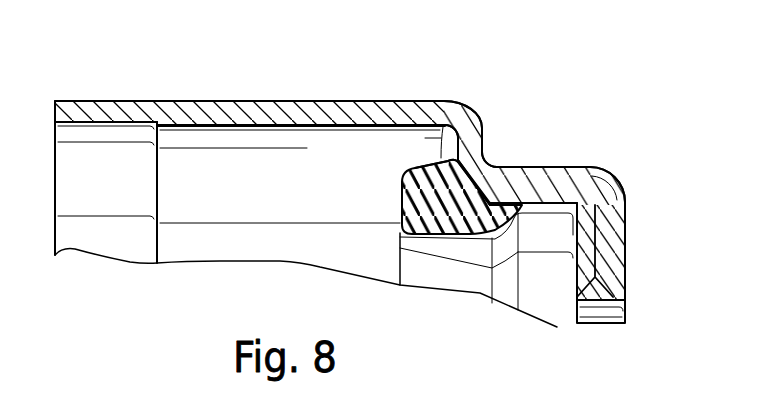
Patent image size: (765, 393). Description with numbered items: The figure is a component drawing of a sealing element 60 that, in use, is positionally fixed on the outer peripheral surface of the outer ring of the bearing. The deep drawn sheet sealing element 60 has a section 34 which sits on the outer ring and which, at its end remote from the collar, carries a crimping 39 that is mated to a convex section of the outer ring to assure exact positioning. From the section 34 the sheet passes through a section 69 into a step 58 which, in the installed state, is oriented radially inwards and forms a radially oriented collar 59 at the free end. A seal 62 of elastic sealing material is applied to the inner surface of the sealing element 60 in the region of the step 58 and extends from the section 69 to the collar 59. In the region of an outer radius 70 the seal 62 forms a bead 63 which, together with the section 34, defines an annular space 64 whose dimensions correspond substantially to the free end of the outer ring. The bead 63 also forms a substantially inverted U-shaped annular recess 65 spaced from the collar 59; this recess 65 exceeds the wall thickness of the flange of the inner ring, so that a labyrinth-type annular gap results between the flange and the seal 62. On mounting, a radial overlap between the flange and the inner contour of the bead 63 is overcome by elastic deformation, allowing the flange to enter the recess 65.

The section 34 is at (232, 101).
The crimping 39 is at (110, 101).
The step 58 is at (502, 158).
The collar 59 is at (627, 215).
The sealing element 60 is at (378, 93).
The seal 62 is at (467, 243).
The bead 63 is at (403, 228).
The annular space 64 is at (442, 136).
The annular recess 65 is at (552, 303).
The section 69 is at (485, 138).
The outer radius 70 is at (445, 172).